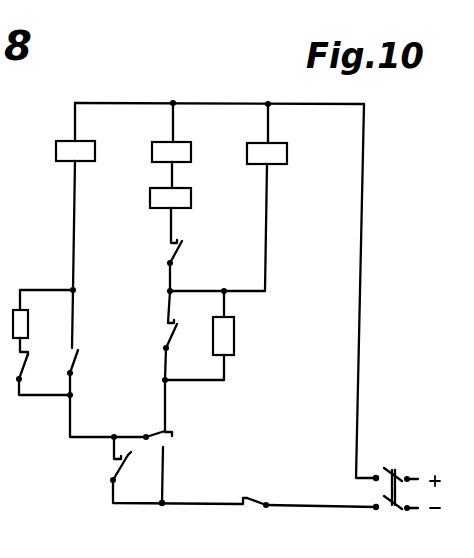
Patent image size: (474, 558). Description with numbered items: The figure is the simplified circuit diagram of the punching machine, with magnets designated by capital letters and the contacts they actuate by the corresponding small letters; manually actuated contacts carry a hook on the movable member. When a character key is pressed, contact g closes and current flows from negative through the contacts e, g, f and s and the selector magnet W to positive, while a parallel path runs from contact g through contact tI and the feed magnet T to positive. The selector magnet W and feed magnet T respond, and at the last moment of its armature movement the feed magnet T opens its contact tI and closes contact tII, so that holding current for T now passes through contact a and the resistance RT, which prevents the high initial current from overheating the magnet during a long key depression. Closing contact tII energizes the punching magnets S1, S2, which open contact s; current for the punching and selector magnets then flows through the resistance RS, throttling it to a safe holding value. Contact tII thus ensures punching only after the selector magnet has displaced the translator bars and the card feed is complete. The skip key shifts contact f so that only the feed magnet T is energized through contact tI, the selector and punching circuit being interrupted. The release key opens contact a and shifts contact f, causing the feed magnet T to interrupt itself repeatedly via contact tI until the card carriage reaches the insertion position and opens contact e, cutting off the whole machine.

The feed magnet T is at (88, 152).
The punching magnet S1 is at (188, 152).
The punching magnet S2 is at (187, 198).
The selector magnet W is at (283, 155).
The contact t11 tII is at (187, 256).
The resistance RT is at (39, 325).
The contact a is at (31, 367).
The contact t1 tI is at (82, 363).
The contact s is at (178, 339).
The resistance RS is at (241, 336).
The contact f is at (168, 438).
The contact g is at (130, 466).
The contact e is at (256, 491).